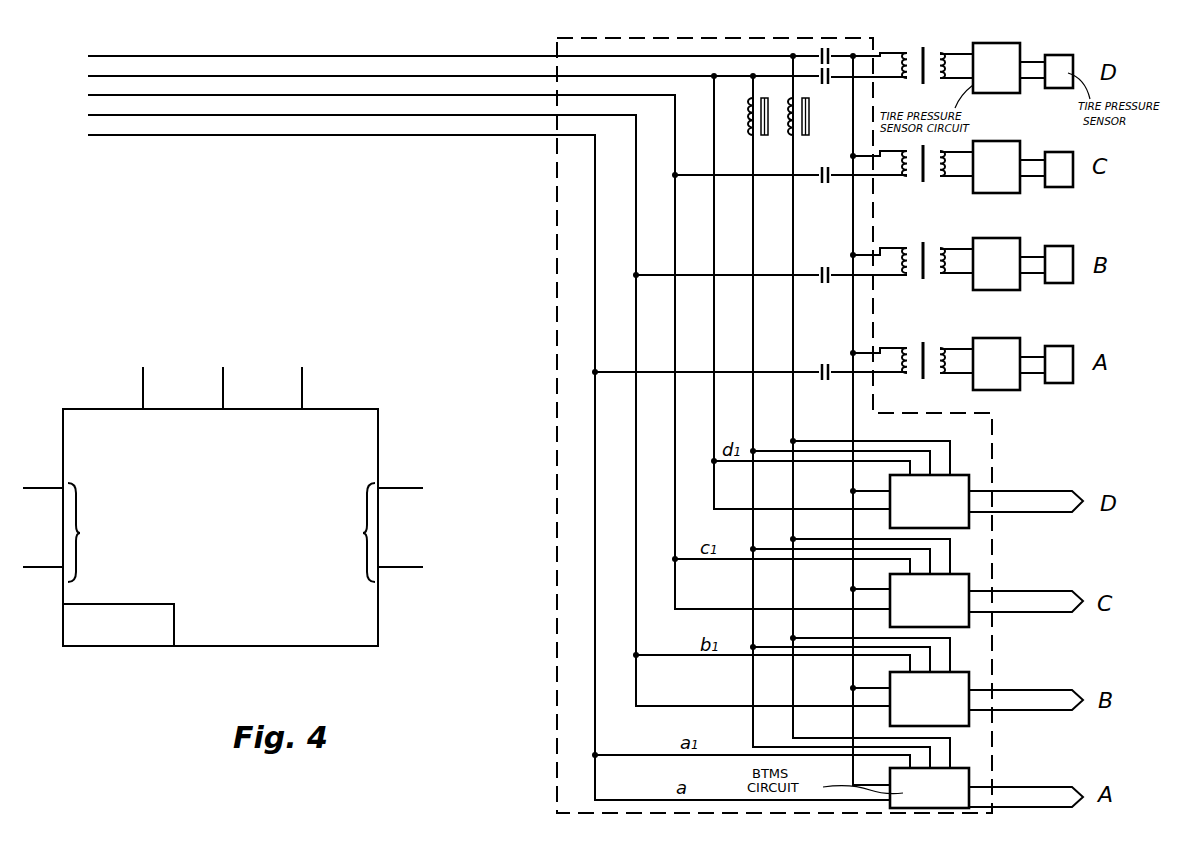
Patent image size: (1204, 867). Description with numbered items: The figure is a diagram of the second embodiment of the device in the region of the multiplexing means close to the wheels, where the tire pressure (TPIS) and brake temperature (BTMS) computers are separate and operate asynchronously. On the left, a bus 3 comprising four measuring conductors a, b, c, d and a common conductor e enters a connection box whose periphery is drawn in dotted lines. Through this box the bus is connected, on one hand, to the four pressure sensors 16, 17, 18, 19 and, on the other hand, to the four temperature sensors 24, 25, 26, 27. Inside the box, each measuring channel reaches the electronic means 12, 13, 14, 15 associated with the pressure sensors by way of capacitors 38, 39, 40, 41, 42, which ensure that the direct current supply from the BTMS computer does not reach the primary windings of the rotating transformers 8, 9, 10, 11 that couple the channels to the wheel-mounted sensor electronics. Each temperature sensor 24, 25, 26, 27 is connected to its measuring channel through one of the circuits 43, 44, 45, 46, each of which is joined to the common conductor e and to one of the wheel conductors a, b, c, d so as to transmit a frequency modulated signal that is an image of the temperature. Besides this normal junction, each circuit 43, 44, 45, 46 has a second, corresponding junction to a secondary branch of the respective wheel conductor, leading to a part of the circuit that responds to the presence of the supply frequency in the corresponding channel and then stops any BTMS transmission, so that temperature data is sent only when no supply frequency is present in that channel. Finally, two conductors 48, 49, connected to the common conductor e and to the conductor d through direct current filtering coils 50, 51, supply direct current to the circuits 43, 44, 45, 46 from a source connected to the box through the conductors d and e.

The input signal lines 3 is at (88, 45).
The rotating transformer 8 is at (937, 369).
The rotating transformer 9 is at (937, 271).
The rotating transformer 10 is at (921, 177).
The rotating transformer 11 is at (925, 78).
The electronic means 12 is at (1006, 388).
The electronic means 13 is at (1000, 288).
The electronic means 14 is at (998, 193).
The electronic means 15 is at (994, 93).
The pressure sensor 16 is at (1060, 384).
The pressure sensor 17 is at (1059, 284).
The pressure sensor 18 is at (1063, 187).
The pressure sensor 19 is at (1053, 88).
The temperature sensor 24 is at (1076, 787).
The temperature sensor 25 is at (1076, 690).
The temperature sensor 26 is at (1076, 591).
The temperature sensor 27 is at (1076, 491).
The capacitor 38 is at (820, 365).
The capacitor 39 is at (820, 268).
The capacitor 40 is at (822, 184).
The capacitor 41 is at (828, 79).
The capacitor 42 is at (840, 51).
The circuit 43 is at (965, 773).
The circuit 44 is at (965, 679).
The circuit 45 is at (965, 580).
The circuit 46 is at (965, 480).
The conductor 48 is at (753, 242).
The conductor 49 is at (793, 416).
The direct current filtering coil 50 is at (750, 112).
The direct current filtering coil 51 is at (808, 118).